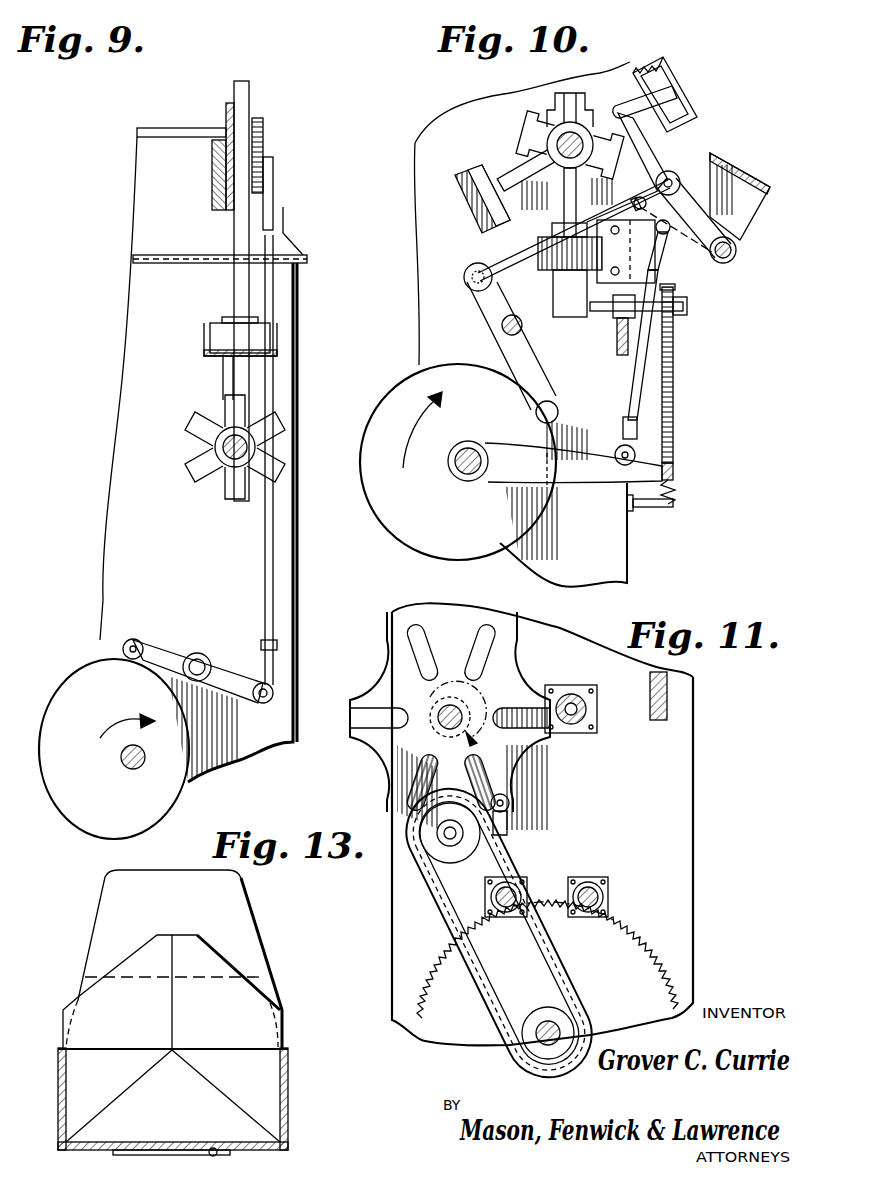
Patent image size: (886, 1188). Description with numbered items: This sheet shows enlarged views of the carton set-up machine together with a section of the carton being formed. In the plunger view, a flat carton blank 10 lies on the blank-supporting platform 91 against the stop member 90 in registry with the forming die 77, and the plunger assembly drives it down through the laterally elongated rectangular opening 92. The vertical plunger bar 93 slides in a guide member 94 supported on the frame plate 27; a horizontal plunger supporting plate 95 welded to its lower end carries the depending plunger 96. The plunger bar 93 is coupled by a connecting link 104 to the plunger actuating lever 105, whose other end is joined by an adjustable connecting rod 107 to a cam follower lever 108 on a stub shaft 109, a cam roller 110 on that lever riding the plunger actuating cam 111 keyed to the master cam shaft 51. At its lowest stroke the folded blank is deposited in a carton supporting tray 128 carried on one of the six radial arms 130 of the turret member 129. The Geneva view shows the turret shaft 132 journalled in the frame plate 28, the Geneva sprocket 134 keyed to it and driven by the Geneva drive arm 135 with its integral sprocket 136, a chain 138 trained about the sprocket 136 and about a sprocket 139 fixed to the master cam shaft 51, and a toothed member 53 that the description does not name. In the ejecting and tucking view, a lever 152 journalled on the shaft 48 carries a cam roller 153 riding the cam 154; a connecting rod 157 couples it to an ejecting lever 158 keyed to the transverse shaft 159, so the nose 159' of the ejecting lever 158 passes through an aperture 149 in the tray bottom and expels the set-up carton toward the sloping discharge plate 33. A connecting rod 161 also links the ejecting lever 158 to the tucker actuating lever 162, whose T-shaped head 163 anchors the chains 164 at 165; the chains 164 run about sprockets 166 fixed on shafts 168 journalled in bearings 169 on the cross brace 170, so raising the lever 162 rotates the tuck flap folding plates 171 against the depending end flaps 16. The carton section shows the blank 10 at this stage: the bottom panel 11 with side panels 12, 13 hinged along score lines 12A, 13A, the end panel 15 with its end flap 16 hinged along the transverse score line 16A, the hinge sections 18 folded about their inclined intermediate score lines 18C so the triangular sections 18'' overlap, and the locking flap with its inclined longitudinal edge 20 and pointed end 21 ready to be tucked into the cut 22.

In FIG. 9, the frame plate 27 is at (297, 612).
In FIG. 10, the frame plate 27 is at (610, 557).
In FIG. 9, the plunger bar 93 is at (250, 86).
In FIG. 9, the guide member 94 is at (227, 116).
In FIG. 9, the connecting link 104 is at (257, 118).
In FIG. 9, the plunger actuating lever 105 is at (272, 190).
In FIG. 9, the rectangular opening 92 is at (214, 255).
In FIG. 9, the stop member 90 is at (298, 246).
In FIG. 9, the blank-supporting platform 91 is at (301, 278).
In FIG. 9, the forming die 77 is at (220, 266).
In FIG. 9, the plunger supporting plate 95 is at (256, 318).
In FIG. 9, the plunger 96 is at (222, 329).
In FIG. 9, the carton supporting tray 128 is at (204, 342).
In FIG. 9, the radial arms 130 is at (223, 378).
In FIG. 9, the turret member 129 is at (188, 433).
In FIG. 9, the adjustable connecting rod 107 is at (275, 567).
In FIG. 9, the cam roller 110 is at (133, 640).
In FIG. 9, the cam follower lever 108 is at (226, 660).
In FIG. 9, the stub shaft 109 is at (208, 692).
In FIG. 9, the plunger actuating cam 111 is at (114, 802).
In FIG. 10, the apertures 149 is at (658, 61).
In FIG. 10, the noses 159' is at (666, 78).
In FIG. 10, the ejecting levers 158 is at (660, 152).
In FIG. 10, the sloping discharge plate 33 is at (735, 163).
In FIG. 10, the connecting rod 157 is at (512, 258).
In FIG. 10, the transverse shaft 159 is at (712, 220).
In FIG. 10, the tuck flap folding plates 171 is at (562, 277).
In FIG. 10, the overfolding lever 152 is at (488, 312).
In FIG. 10, the shaft 48 is at (531, 331).
In FIG. 10, the shafts 168 is at (686, 302).
In FIG. 10, the sprockets 166 is at (676, 313).
In FIG. 10, the bearings 169 is at (617, 318).
In FIG. 10, the cross brace 170 is at (627, 361).
In FIG. 10, the connecting rod 161 is at (644, 360).
In FIG. 10, the chains 164 is at (674, 396).
In FIG. 10, the cam roller 153 is at (558, 417).
In FIG. 10, the master cam shaft 51 is at (471, 441).
In FIG. 10, the chain anchor 165 is at (668, 458).
In FIG. 10, the T-shaped head 163 is at (675, 474).
In FIG. 10, the cam 154 is at (457, 517).
In FIG. 10, the tucker actuating lever 162 is at (570, 476).
In FIG. 11, the turret shaft 132 is at (438, 731).
In FIG. 11, the Geneva sprocket 134 is at (503, 750).
In FIG. 11, the frame plate 28 is at (683, 804).
In FIG. 11, the Geneva drive arm 135 is at (508, 832).
In FIG. 11, the sprocket 136 is at (447, 868).
In FIG. 11, the gear 53 is at (627, 955).
In FIG. 11, the chain 138 is at (550, 957).
In FIG. 11, the sprocket 139 is at (572, 1014).
In FIG. 13, the carton blank 10 is at (72, 988).
In FIG. 13, the end flaps 16 is at (241, 916).
In FIG. 13, the transverse score lines 16A is at (88, 975).
In FIG. 13, the inclined longitudinal edge 20 is at (134, 942).
In FIG. 13, the pointed end 21 is at (167, 933).
In FIG. 13, the triangular sections 18'' is at (201, 999).
In FIG. 13, the side panel 12 is at (58, 1095).
In FIG. 13, the side panel 13 is at (288, 1096).
In FIG. 13, the bottom panel 11 is at (278, 1142).
In FIG. 13, the score line 12A is at (60, 1146).
In FIG. 13, the score line 13A is at (288, 1152).
In FIG. 13, the hinge sections 18 is at (173, 1096).
In FIG. 13, the inclined intermediate score lines 18C is at (247, 1102).
In FIG. 13, the end panel 15 is at (192, 1131).
In FIG. 13, the cuts 22 is at (214, 1153).